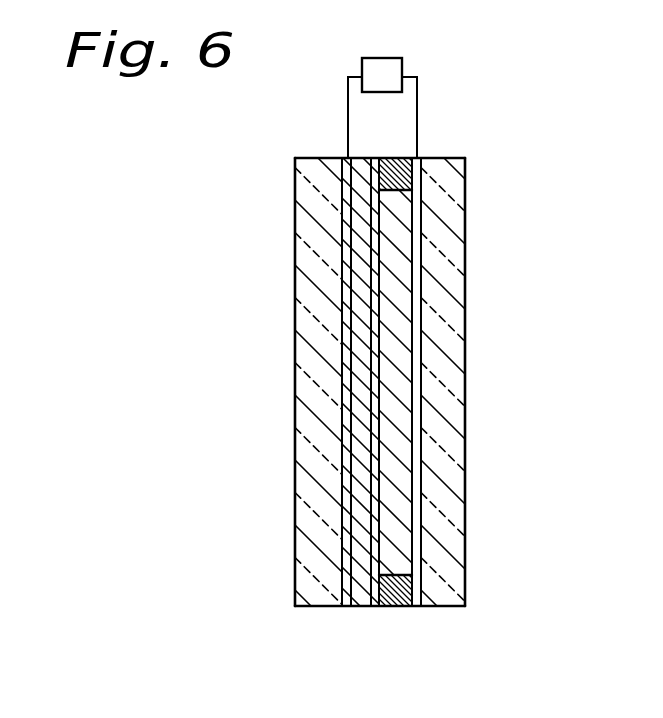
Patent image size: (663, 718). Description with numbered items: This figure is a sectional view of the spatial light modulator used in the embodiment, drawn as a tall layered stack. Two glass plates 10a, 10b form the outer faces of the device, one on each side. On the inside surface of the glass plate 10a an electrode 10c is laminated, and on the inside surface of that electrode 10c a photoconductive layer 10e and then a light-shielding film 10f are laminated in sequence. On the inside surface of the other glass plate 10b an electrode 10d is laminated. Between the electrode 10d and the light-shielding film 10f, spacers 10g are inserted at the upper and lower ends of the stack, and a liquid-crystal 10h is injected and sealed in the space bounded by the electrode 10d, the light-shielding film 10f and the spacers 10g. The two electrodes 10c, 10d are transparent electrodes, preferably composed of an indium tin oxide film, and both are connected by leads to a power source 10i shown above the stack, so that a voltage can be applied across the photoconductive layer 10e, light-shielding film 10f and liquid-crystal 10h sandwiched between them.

The glass plate 10a is at (308, 289).
The glass plate 10b is at (455, 314).
The electrode 10c is at (346, 158).
The electrode 10d is at (418, 158).
The photoconductive layer 10e is at (360, 496).
The light-shielding film 10f is at (370, 607).
The spacers 10g is at (393, 158).
The liquid-crystal 10h is at (397, 500).
The power source 10i is at (405, 73).